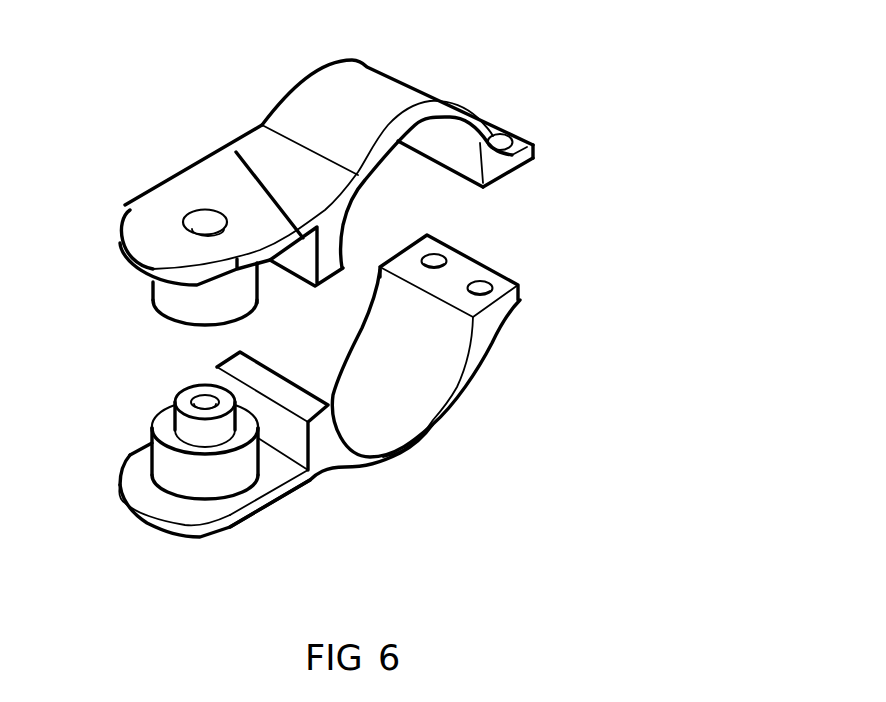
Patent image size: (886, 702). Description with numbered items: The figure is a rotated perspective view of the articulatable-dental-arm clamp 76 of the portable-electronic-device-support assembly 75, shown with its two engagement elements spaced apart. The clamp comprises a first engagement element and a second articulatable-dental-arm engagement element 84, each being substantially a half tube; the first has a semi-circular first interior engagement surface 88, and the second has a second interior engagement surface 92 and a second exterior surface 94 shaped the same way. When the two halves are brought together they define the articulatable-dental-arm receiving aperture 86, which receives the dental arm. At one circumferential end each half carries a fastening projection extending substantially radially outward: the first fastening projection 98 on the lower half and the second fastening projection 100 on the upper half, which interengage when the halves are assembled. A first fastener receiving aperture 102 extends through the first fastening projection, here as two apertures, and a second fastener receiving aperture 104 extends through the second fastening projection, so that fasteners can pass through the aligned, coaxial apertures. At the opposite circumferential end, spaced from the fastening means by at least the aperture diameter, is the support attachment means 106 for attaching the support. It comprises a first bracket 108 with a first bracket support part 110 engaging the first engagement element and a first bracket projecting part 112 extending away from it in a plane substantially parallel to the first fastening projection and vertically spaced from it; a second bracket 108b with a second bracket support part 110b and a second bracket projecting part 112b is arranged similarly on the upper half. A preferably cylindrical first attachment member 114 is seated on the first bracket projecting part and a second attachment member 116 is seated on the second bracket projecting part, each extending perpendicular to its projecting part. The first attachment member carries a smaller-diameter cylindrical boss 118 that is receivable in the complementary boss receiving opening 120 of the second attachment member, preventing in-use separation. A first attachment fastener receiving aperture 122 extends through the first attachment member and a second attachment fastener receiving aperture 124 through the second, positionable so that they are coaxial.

The portable-electronic-device-support assembly 75 is at (678, 256).
The articulatable-dental-arm clamp 76 is at (470, 352).
The second articulatable-dental-arm engagement element 84 is at (417, 110).
The articulatable-dental-arm receiving aperture 86 is at (380, 423).
The first interior engagement surface 88 is at (420, 400).
The second interior engagement surface 92 is at (468, 163).
The second exterior surface 94 is at (367, 83).
The first fastening projection 98 is at (510, 298).
The second fastening projection 100 is at (535, 155).
The first fastener receiving aperture 102 is at (487, 288).
The second fastener receiving aperture 104 is at (507, 140).
The support attachment means 106 is at (180, 440).
The first bracket 108 is at (252, 514).
The second bracket 108b is at (200, 177).
The first bracket support part 110 is at (297, 448).
The second bracket support part 110b is at (300, 252).
The first bracket projecting part 112 is at (160, 522).
The second bracket projecting part 112b is at (147, 230).
The first attachment member 114 is at (197, 497).
The second attachment member 116 is at (172, 303).
The boss 118 is at (180, 428).
The boss receiving opening 120 is at (200, 323).
The first attachment fastener receiving aperture 122 is at (200, 400).
The second attachment fastener receiving aperture 124 is at (205, 223).